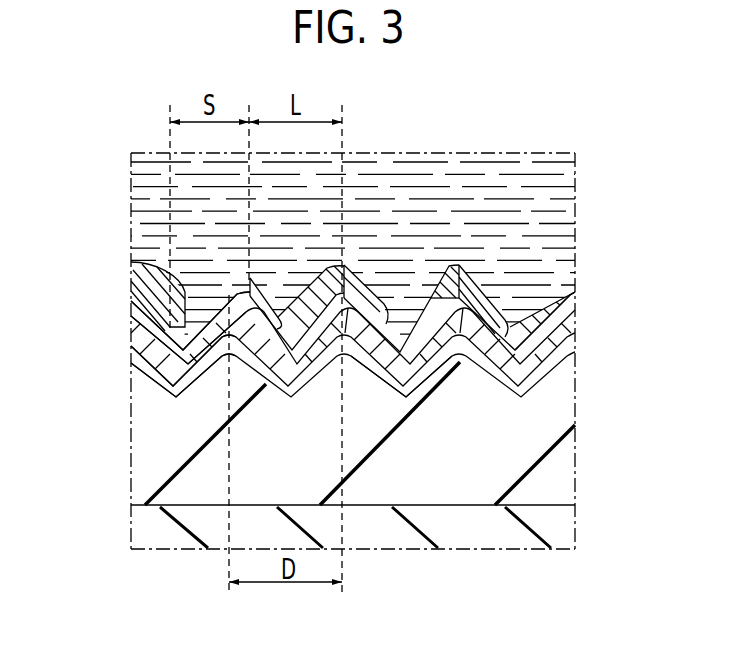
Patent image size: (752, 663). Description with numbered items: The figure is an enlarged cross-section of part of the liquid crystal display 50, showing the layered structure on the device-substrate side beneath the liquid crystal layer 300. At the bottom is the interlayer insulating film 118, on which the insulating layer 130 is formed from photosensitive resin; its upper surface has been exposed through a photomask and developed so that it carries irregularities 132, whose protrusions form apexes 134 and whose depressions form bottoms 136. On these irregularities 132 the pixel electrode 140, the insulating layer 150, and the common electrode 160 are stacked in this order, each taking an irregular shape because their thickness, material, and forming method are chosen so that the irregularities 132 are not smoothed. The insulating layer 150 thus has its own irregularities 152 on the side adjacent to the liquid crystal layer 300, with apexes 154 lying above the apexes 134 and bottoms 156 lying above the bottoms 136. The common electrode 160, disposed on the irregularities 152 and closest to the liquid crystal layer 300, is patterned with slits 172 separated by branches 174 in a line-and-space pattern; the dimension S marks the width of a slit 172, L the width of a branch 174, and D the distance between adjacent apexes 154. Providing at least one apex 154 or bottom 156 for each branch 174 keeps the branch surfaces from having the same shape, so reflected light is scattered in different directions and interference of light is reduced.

The liquid crystal display 50 is at (123, 107).
The liquid crystal layer 300 is at (131, 160).
The slits 172 is at (132, 278).
The common electrode 160 is at (131, 300).
The pixel electrode 140 is at (131, 350).
The branches 174 is at (325, 268).
The bottoms 156 is at (402, 335).
The apexes 154 is at (467, 275).
The irregularities 152 is at (556, 292).
The insulating layer 150 is at (576, 322).
The irregularities 132 is at (576, 390).
The insulating layer 130 is at (556, 465).
The interlayer insulating film 118 is at (148, 531).
The bottoms 136 is at (405, 399).
The apexes 134 is at (463, 366).